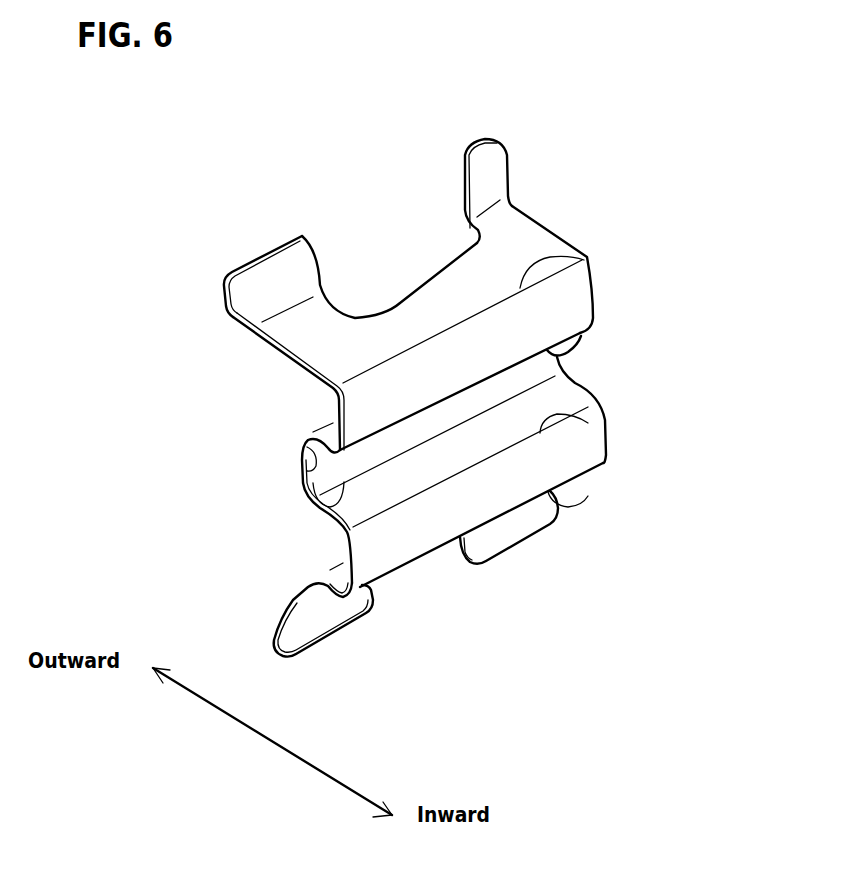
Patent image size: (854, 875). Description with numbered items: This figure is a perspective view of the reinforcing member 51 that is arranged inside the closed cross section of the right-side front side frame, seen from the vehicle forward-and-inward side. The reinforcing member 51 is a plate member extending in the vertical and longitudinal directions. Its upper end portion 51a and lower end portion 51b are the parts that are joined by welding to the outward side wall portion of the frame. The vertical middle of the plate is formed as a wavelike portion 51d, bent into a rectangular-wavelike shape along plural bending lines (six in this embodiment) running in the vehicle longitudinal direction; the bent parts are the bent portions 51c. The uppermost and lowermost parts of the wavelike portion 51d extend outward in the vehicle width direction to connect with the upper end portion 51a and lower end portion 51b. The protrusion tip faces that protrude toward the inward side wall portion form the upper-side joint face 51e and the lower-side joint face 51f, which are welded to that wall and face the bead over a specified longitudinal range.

The reinforcing member 51 is at (493, 117).
The upper end portion 51a is at (262, 281).
The lower end portion 51b is at (510, 534).
The bent portions 51c is at (550, 357).
The wavelike portion 51d is at (605, 329).
The upper-side joint face 51e is at (460, 367).
The lower-side joint face 51f is at (427, 540).